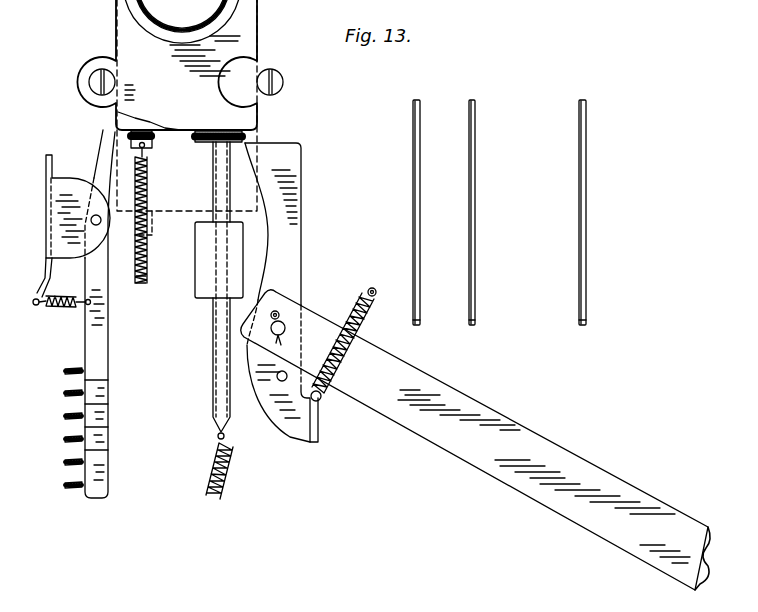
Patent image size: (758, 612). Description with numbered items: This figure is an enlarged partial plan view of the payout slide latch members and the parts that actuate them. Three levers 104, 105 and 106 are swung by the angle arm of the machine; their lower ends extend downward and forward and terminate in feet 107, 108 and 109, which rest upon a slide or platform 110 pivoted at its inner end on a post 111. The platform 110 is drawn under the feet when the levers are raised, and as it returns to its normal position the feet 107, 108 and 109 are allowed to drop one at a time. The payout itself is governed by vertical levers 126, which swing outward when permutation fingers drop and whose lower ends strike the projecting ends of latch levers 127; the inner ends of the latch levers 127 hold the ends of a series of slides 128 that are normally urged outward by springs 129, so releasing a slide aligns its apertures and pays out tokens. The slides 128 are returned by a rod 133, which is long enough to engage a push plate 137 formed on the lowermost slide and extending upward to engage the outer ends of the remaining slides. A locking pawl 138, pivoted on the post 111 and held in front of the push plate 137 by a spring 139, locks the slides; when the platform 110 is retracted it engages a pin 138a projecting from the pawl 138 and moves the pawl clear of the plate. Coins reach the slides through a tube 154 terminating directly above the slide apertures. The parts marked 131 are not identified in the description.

The lever 104 is at (579, 202).
The lever 105 is at (469, 172).
The lever 106 is at (413, 160).
The foot 107 is at (582, 325).
The foot 108 is at (475, 325).
The foot 109 is at (420, 325).
The slide or platform 110 is at (432, 435).
The post 111 is at (284, 323).
The vertical levers 126 is at (66, 485).
The latch levers 127 is at (86, 341).
The slides 128 is at (125, 120).
The springs 129 is at (147, 276).
The screws 131 is at (84, 89).
The rod 133 is at (214, 322).
The push plate 137 is at (164, 215).
The locking pawl 138 is at (295, 240).
The pin 138a is at (282, 381).
The spring 139 is at (345, 370).
The tube 154 is at (230, 10).